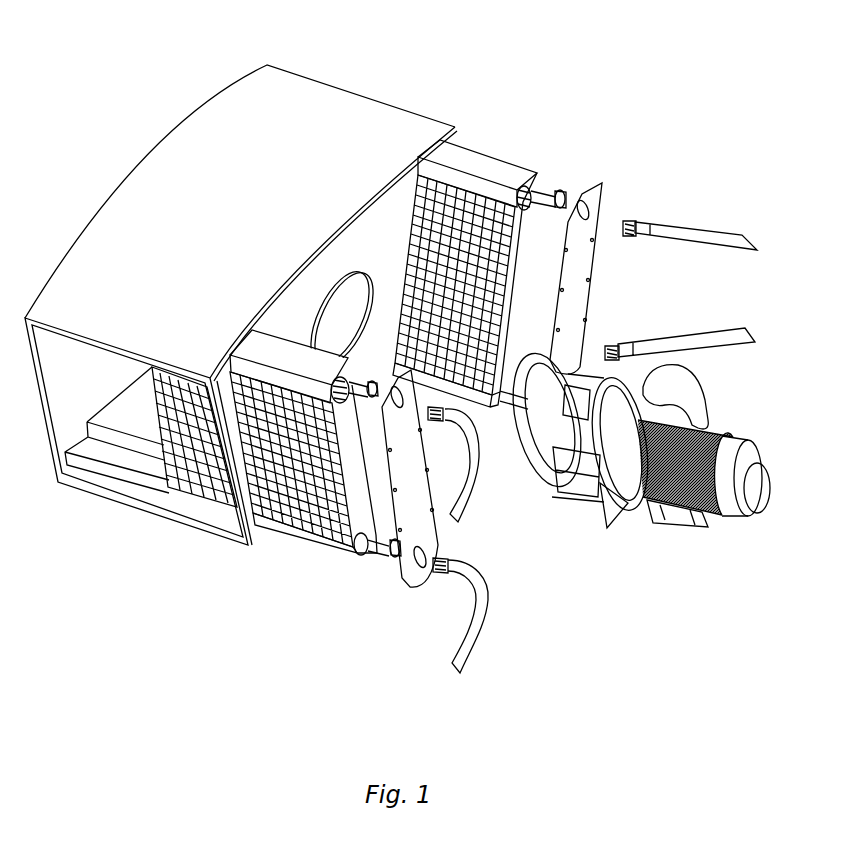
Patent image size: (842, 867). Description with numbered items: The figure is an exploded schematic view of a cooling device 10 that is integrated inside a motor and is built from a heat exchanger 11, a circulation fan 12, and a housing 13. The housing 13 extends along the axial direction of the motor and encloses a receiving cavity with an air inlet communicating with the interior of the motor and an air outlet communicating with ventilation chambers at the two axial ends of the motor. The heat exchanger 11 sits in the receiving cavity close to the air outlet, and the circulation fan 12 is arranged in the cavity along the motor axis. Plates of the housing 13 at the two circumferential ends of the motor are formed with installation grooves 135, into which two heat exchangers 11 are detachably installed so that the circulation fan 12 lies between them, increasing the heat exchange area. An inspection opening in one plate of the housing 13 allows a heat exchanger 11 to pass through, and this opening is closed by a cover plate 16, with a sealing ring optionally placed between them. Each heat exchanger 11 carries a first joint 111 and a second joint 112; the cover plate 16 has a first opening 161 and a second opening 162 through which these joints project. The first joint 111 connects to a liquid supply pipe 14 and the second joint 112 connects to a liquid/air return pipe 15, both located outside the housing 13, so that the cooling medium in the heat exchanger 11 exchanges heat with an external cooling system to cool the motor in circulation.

The cooling device 10 is at (367, 40).
The heat exchanger 11 is at (447, 207).
The first joint 111 is at (378, 547).
The second joint 112 is at (543, 190).
The circulation fan 12 is at (627, 517).
The housing 13 is at (147, 157).
The installation grooves 135 is at (125, 460).
The liquid supply pipe 14 is at (678, 333).
The liquid/air return pipe 15 is at (695, 223).
The cover plate 16 is at (580, 350).
The first opening 161 is at (417, 583).
The second opening 162 is at (597, 192).